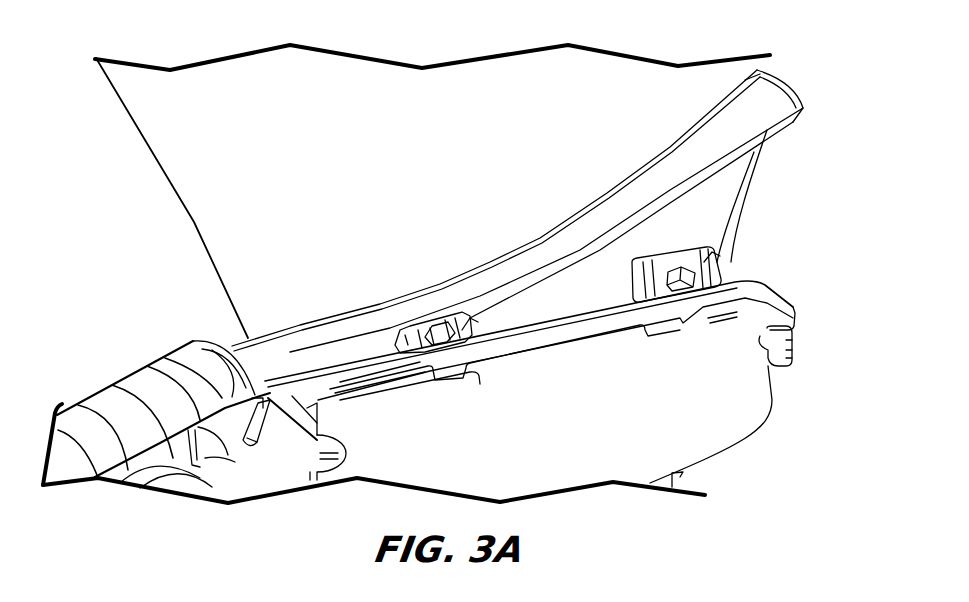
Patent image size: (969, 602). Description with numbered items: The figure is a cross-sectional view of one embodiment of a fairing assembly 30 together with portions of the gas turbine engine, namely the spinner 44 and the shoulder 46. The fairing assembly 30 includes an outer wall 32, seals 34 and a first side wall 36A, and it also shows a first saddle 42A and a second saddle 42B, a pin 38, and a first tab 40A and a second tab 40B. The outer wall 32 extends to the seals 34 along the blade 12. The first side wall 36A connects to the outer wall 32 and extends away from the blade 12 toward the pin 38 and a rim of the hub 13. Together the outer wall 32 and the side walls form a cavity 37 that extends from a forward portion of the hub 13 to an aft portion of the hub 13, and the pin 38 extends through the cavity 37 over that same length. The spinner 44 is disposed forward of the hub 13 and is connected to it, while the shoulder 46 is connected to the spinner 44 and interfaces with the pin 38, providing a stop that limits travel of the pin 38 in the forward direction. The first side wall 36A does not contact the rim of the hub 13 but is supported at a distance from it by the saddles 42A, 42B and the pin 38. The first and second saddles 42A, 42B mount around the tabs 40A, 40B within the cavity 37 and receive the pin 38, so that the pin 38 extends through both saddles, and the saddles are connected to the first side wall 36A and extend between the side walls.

The blade 12 is at (220, 215).
The hub 13 is at (703, 412).
The fairing assembly 30 is at (617, 147).
The outer wall 32 is at (775, 90).
The seals 34 is at (757, 58).
The first side wall 36A is at (713, 203).
The cavity 37 is at (771, 153).
The pin 38 is at (563, 332).
The first tab 40A is at (438, 325).
The second tab 40B is at (670, 267).
The first saddle 42A is at (470, 322).
The second saddle 42B is at (713, 262).
The spinner 44 is at (170, 378).
The shoulder 46 is at (222, 342).